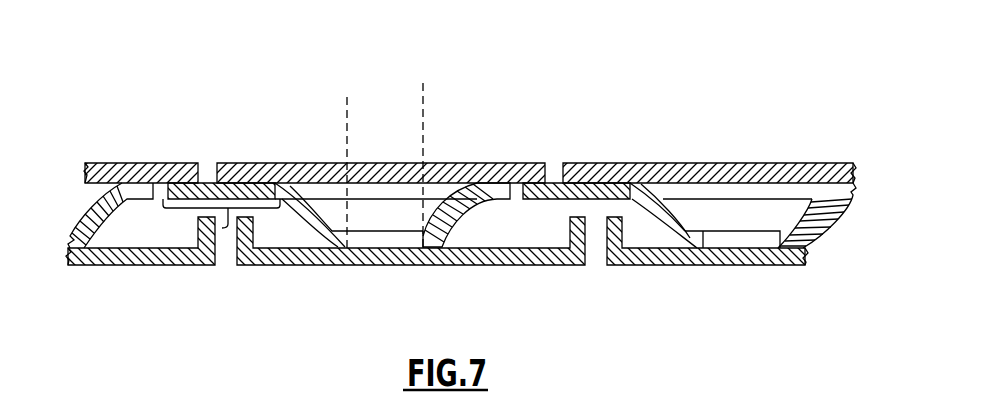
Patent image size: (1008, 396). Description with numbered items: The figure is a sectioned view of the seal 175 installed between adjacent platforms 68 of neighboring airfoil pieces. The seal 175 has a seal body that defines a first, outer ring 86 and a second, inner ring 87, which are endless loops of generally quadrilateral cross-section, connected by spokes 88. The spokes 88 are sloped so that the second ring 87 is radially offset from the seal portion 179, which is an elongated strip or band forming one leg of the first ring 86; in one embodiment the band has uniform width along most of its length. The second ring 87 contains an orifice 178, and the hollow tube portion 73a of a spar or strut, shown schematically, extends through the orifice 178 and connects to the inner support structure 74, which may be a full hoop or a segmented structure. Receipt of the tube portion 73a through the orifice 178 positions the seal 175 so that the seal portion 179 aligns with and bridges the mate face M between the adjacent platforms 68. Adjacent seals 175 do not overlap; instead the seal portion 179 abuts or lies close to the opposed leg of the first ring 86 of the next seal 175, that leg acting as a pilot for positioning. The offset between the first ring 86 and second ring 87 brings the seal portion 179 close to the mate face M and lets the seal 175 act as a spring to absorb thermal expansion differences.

The platforms 68 is at (143, 163).
The mate face M is at (207, 163).
The seal portion 179 is at (246, 163).
The hollow tube portion 73a is at (347, 97).
The second ring 87 is at (410, 240).
The spoke 88 is at (310, 215).
The orifice 178 is at (395, 232).
The seal 175 is at (493, 200).
The first ring 86 is at (222, 228).
The inner support structure 74 is at (270, 265).